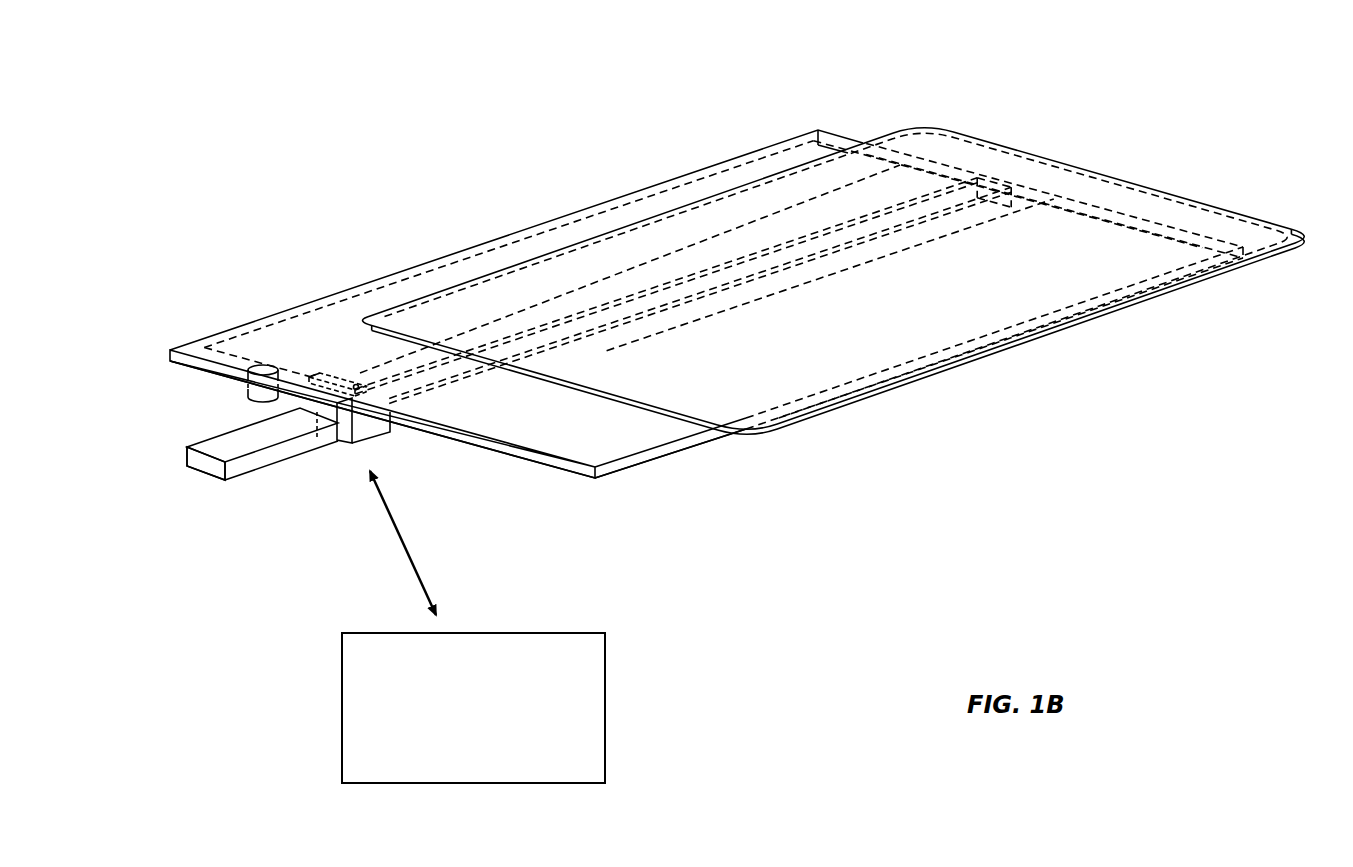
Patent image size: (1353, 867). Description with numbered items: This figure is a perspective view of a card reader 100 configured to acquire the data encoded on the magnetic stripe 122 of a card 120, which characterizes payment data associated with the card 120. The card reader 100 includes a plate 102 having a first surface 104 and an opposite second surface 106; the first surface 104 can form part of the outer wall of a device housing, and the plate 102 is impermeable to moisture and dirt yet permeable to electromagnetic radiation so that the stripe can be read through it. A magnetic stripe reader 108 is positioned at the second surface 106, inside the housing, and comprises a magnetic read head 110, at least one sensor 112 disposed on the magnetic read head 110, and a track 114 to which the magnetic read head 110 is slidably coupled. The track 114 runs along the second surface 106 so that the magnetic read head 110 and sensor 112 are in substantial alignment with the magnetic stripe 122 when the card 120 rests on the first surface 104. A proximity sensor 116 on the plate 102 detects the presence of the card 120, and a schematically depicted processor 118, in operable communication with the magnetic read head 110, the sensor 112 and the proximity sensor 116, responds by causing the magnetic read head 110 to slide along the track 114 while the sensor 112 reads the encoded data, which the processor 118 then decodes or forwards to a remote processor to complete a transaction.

The card reader 100 is at (306, 156).
The plate 102 is at (660, 185).
The first surface 104 is at (808, 152).
The second surface 106 is at (660, 455).
The magnetic stripe reader 108 is at (258, 468).
The magnetic read head 110 is at (367, 443).
The sensor 112 is at (313, 377).
The track 114 is at (205, 472).
The proximity sensor 116 is at (250, 388).
The processor 118 is at (473, 627).
The card 120 is at (1145, 310).
The magnetic stripe 122 is at (975, 165).